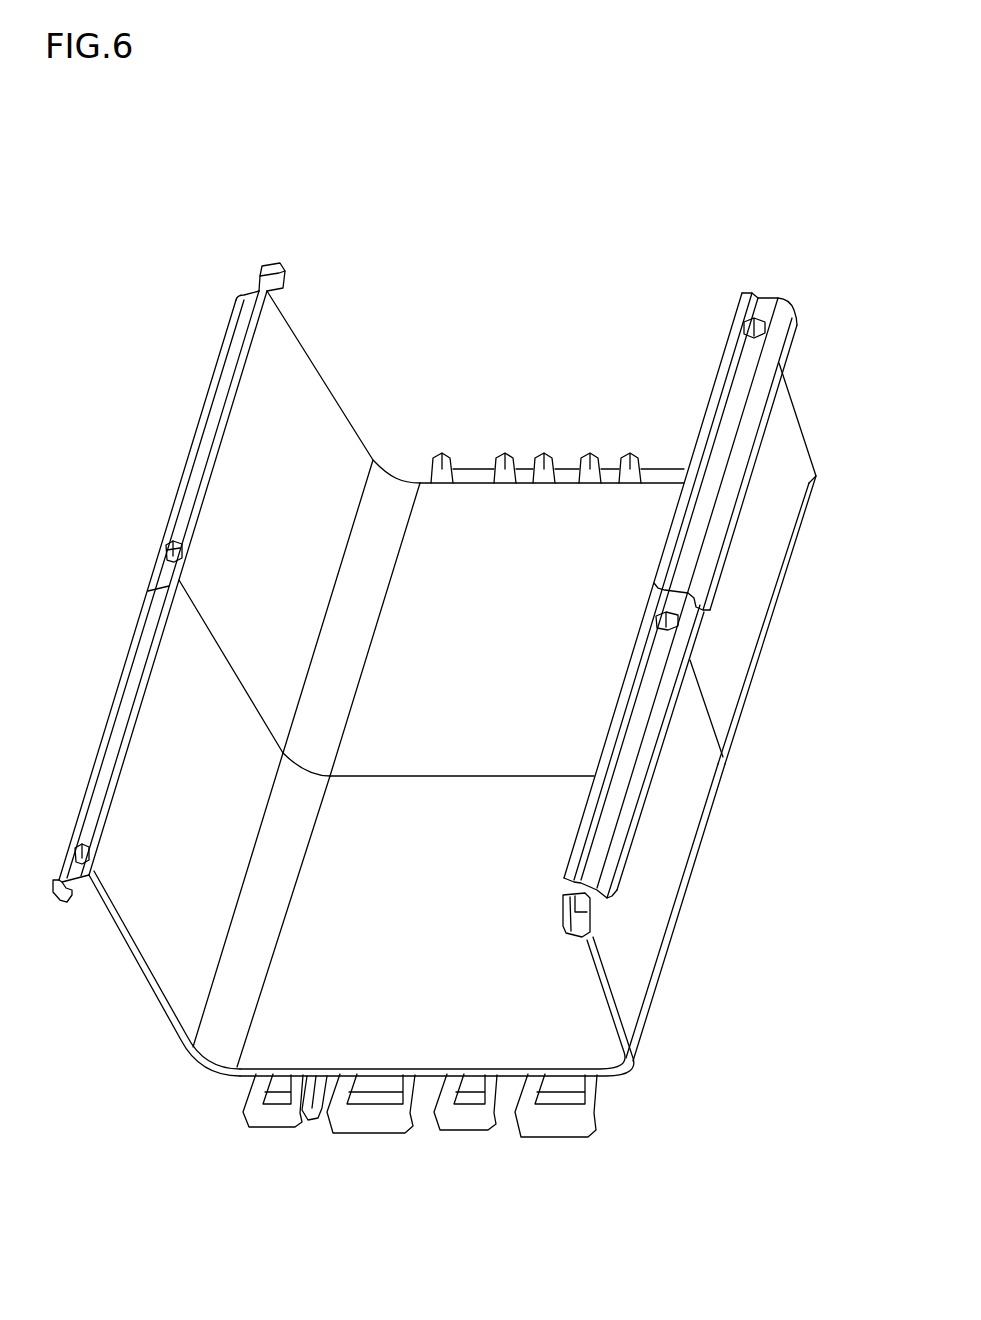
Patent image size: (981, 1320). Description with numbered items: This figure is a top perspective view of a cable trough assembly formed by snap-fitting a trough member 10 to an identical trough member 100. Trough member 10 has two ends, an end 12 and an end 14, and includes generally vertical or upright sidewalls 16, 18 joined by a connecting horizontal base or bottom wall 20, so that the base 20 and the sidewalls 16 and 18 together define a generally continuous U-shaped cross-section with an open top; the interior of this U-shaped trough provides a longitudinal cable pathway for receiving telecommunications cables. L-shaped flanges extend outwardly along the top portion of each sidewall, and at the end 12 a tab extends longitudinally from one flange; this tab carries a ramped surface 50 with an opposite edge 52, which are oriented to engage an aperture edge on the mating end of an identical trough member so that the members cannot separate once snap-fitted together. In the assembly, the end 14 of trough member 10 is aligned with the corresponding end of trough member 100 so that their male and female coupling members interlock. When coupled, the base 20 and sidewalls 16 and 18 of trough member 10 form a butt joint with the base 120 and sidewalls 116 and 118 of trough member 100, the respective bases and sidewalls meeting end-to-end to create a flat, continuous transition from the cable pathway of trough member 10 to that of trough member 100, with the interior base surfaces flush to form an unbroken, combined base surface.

The trough member 10 is at (110, 692).
The end 12 is at (403, 769).
The end 14 is at (425, 778).
The sidewall 16 is at (157, 928).
The sidewall 18 is at (667, 880).
The base 20 is at (447, 956).
The ramped surface 50 is at (572, 918).
The opposite edge 52 is at (583, 910).
The trough member 100 is at (215, 375).
The sidewall 116 is at (306, 407).
The sidewall 118 is at (777, 452).
The base 120 is at (543, 624).